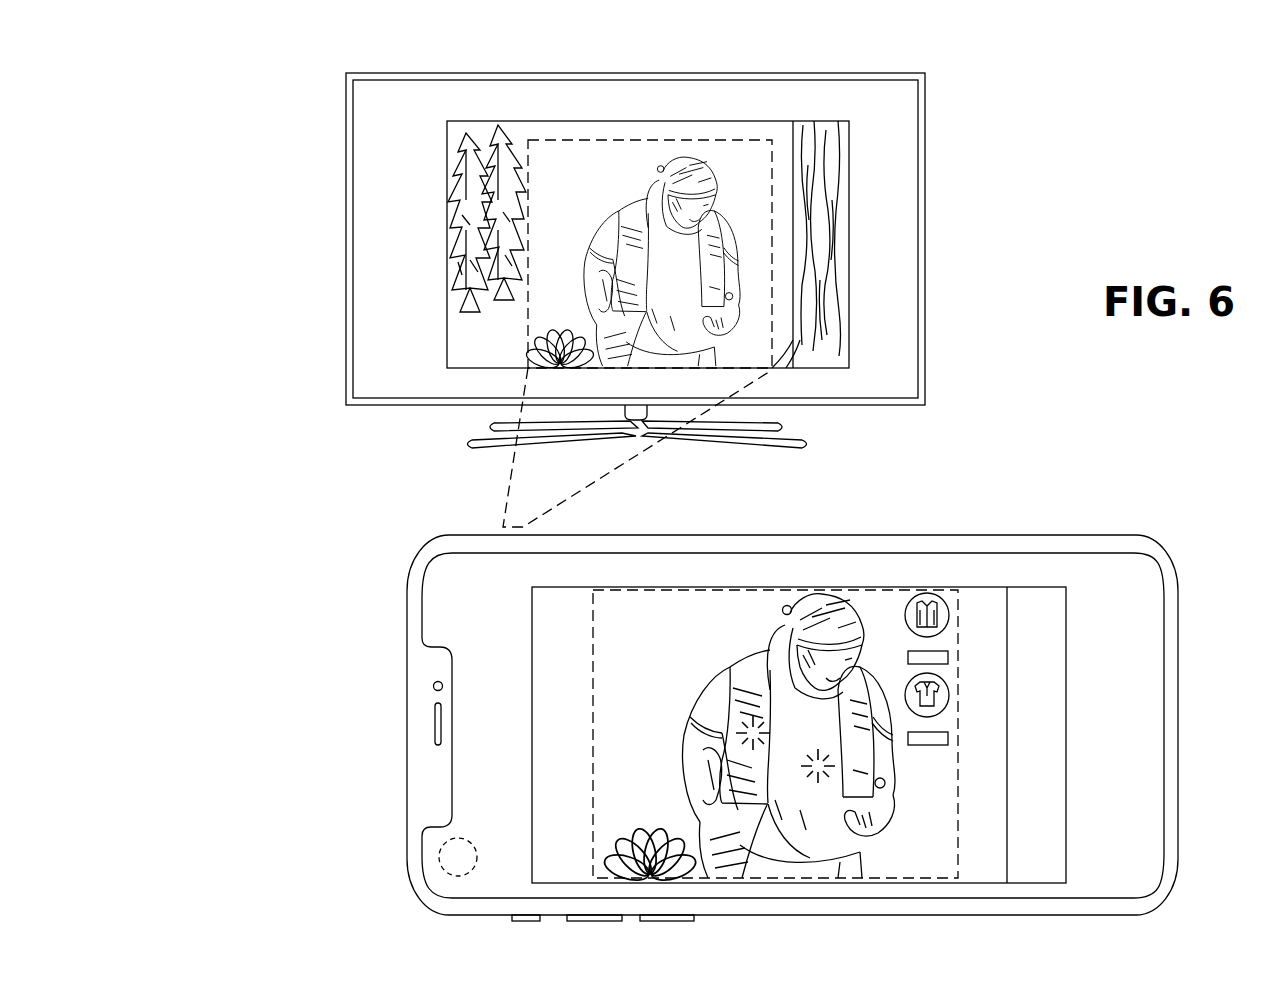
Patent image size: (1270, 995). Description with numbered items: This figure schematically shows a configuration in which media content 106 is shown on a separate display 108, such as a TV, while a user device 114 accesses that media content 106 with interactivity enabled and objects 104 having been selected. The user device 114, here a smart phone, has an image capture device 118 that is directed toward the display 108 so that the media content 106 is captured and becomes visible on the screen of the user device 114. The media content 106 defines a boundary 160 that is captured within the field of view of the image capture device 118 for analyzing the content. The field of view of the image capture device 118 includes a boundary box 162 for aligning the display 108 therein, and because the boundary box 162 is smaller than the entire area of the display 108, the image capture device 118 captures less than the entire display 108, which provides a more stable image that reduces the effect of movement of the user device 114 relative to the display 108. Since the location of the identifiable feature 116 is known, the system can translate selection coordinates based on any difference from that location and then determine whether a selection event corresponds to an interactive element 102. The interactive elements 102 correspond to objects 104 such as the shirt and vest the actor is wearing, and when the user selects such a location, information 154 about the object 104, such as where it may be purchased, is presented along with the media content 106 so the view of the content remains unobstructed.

The interactive elements 102 is at (755, 752).
The objects 104 is at (645, 186).
The media content 106 is at (851, 179).
The display 108 is at (318, 95).
The user device 114 is at (386, 548).
The identifiable feature 116 is at (530, 334).
The image capture device 118 is at (400, 653).
The information 154 is at (950, 697).
The boundary 160 is at (700, 140).
The boundary box 162 is at (958, 853).